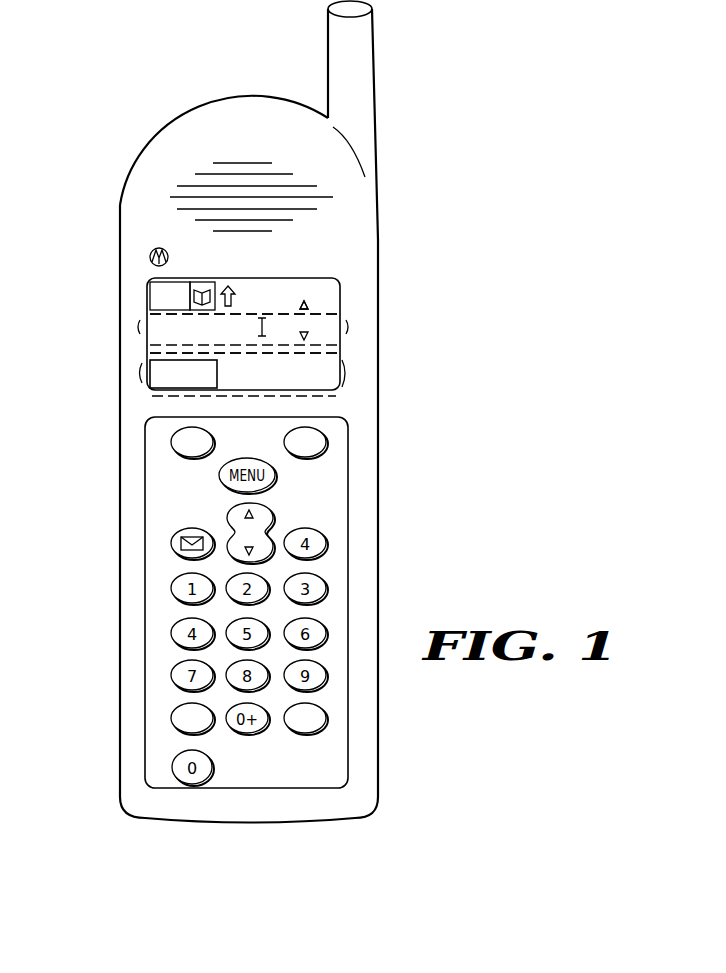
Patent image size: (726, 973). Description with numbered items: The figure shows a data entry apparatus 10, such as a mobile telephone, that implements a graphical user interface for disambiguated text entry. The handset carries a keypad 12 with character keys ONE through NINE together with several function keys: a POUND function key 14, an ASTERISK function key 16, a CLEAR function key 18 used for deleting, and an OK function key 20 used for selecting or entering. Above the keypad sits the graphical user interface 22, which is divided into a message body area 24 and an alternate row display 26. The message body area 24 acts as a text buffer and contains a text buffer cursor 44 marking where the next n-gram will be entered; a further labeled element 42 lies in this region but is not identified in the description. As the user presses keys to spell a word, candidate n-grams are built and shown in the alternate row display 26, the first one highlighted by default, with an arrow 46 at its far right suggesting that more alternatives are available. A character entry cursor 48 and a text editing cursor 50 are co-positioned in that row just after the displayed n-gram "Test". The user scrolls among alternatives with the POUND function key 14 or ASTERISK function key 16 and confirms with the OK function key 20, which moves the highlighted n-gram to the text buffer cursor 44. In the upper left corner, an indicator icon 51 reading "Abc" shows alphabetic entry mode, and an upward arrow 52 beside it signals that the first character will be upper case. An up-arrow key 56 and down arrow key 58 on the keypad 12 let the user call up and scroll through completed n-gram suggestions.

The data entry apparatus 10 is at (128, 108).
The keypad 12 is at (365, 455).
The POUND function key 14 is at (327, 717).
The ASTERISK function key 16 is at (170, 717).
The CLEAR function key 18 is at (172, 438).
The OK function key 20 is at (327, 447).
The graphical user interface 22 is at (322, 303).
The message body area 24 is at (350, 327).
The alternate row display 26 is at (350, 372).
The cursor 42 is at (262, 327).
The text buffer cursor 44 is at (338, 303).
The arrow 46 is at (328, 383).
The character entry cursor 48 is at (148, 371).
The text editing cursor 50 is at (215, 378).
The indicator icon 51 is at (148, 293).
The arrow 52 is at (237, 290).
The up-arrow key 56 is at (337, 541).
The down arrow key 58 is at (272, 553).